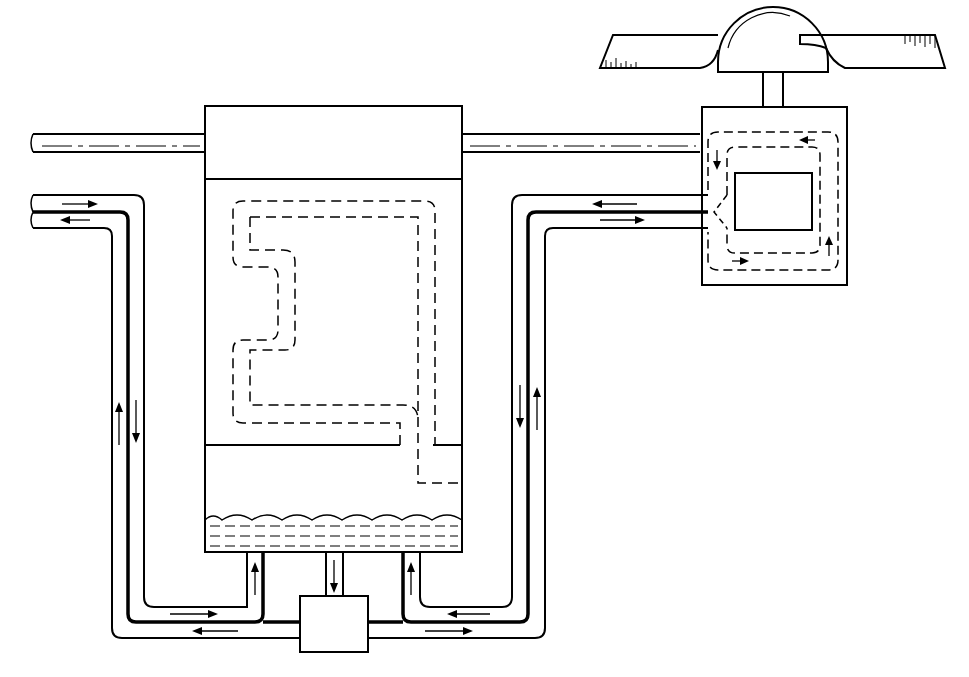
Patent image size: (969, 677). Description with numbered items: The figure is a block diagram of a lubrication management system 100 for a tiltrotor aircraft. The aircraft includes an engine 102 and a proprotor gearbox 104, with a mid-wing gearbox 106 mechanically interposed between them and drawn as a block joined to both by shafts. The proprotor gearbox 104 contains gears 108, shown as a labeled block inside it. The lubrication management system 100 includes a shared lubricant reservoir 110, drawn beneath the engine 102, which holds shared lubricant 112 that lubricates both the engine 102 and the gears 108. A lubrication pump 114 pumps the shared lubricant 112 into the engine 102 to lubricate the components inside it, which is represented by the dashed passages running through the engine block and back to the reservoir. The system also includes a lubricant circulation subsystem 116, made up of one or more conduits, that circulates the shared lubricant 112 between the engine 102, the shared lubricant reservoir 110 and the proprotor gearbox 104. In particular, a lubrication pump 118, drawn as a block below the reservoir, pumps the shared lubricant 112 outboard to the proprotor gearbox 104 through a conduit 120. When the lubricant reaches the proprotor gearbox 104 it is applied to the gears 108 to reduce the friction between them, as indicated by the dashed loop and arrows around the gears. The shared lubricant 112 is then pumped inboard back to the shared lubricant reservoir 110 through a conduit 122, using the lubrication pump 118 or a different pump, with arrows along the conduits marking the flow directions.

The lubrication management system 100 is at (112, 99).
The engine 102 is at (215, 193).
The proprotor gearbox 104 is at (848, 195).
The mid-wing gearbox 106 is at (332, 113).
The gears 108 is at (777, 231).
The shared lubricant reservoir 110 is at (212, 497).
The shared lubricant 112 is at (205, 527).
The lubrication pump 114 is at (450, 465).
The lubricant circulation subsystem 116 is at (552, 428).
The lubrication pump 118 is at (313, 638).
The conduit 120 is at (545, 335).
The conduit 122 is at (510, 245).